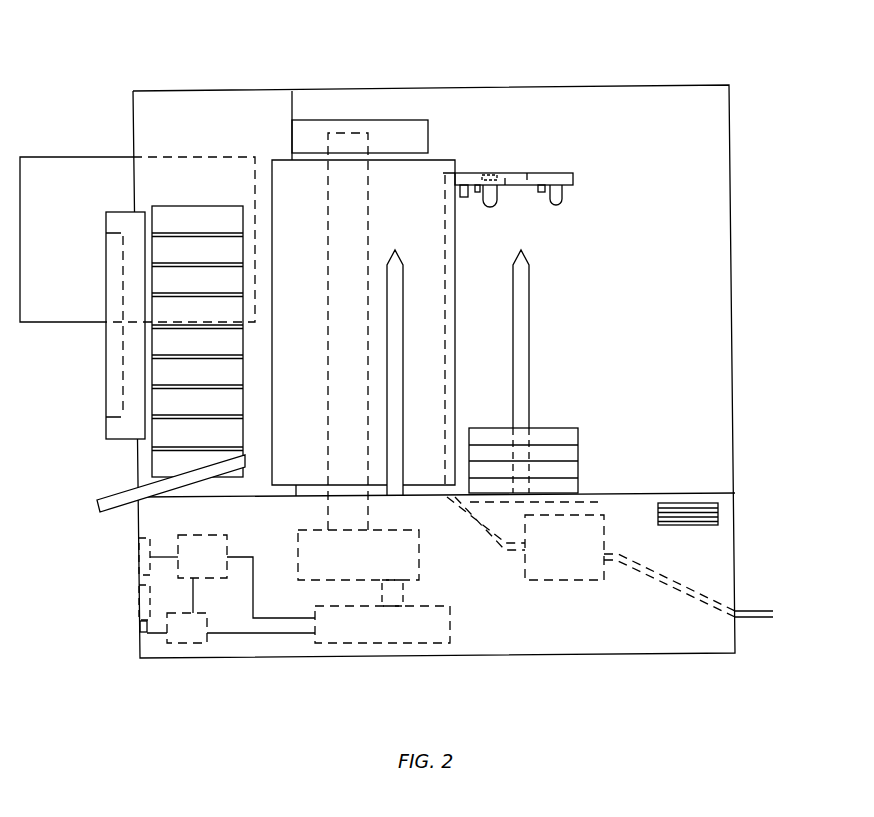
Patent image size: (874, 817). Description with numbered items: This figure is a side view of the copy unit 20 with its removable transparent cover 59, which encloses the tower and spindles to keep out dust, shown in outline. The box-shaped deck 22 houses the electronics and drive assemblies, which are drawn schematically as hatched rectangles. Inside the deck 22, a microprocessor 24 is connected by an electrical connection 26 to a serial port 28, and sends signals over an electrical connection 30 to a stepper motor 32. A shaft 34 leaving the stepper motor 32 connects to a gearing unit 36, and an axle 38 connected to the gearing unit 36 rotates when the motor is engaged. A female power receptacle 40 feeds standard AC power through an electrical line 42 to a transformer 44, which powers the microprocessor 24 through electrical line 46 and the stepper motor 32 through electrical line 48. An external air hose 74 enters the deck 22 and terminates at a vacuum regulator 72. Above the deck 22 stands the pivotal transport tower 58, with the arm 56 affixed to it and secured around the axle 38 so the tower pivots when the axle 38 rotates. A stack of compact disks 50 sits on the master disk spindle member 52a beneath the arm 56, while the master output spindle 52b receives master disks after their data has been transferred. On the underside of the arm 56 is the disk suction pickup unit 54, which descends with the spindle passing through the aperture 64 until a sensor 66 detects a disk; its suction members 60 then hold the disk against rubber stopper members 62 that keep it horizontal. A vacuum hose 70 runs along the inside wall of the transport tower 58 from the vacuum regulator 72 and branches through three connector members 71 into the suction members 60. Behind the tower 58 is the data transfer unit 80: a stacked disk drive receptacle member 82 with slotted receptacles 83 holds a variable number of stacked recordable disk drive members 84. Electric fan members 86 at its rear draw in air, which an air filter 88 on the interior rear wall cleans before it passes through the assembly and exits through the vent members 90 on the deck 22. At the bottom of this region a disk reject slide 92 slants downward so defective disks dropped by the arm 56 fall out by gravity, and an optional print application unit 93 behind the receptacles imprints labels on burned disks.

The copy unit 20 is at (339, 68).
The deck 22 is at (737, 552).
The microprocessor 24 is at (178, 643).
The electrical connection 26 is at (145, 627).
The RS-232 port 28 is at (138, 605).
The electrical connection 30 is at (238, 634).
The stepper motor 32 is at (392, 643).
The shaft 34 is at (404, 593).
The gearing unit 36 is at (420, 548).
The axle 38 is at (370, 518).
The female power receptacle 40 is at (138, 568).
The electrical line 42 is at (160, 555).
The transformer 44 is at (213, 535).
The electrical line 46 is at (196, 595).
The electrical line 48 is at (282, 619).
The compact disks 50 is at (578, 460).
The master disk spindle member 52a is at (530, 327).
The master output spindle 52b is at (402, 310).
The disk suction pickup unit 54 is at (573, 184).
The arm 56 is at (573, 173).
The pivotal transport tower 58 is at (430, 256).
The removable transparent cover 59 is at (733, 244).
The suction members 60 is at (562, 202).
The rubber stopper members 62 is at (478, 183).
The aperture 64 is at (515, 181).
The sensor 66 is at (461, 184).
The vacuum hose 70 is at (452, 385).
The connector members 71 is at (487, 176).
The vacuum regulator 72 is at (592, 580).
The external air hose 74 is at (758, 620).
The data transfer unit 80 is at (133, 105).
The stacked disk drive receptacle member 82 is at (198, 205).
The slotted receptacles 83 is at (165, 358).
The stacked recordable disk drive member 84 is at (165, 282).
The electric fan members 86 is at (106, 255).
The air filter 88 is at (142, 427).
The vent 90 is at (690, 502).
The disk reject slide 92 is at (115, 495).
The print application unit 93 is at (68, 155).